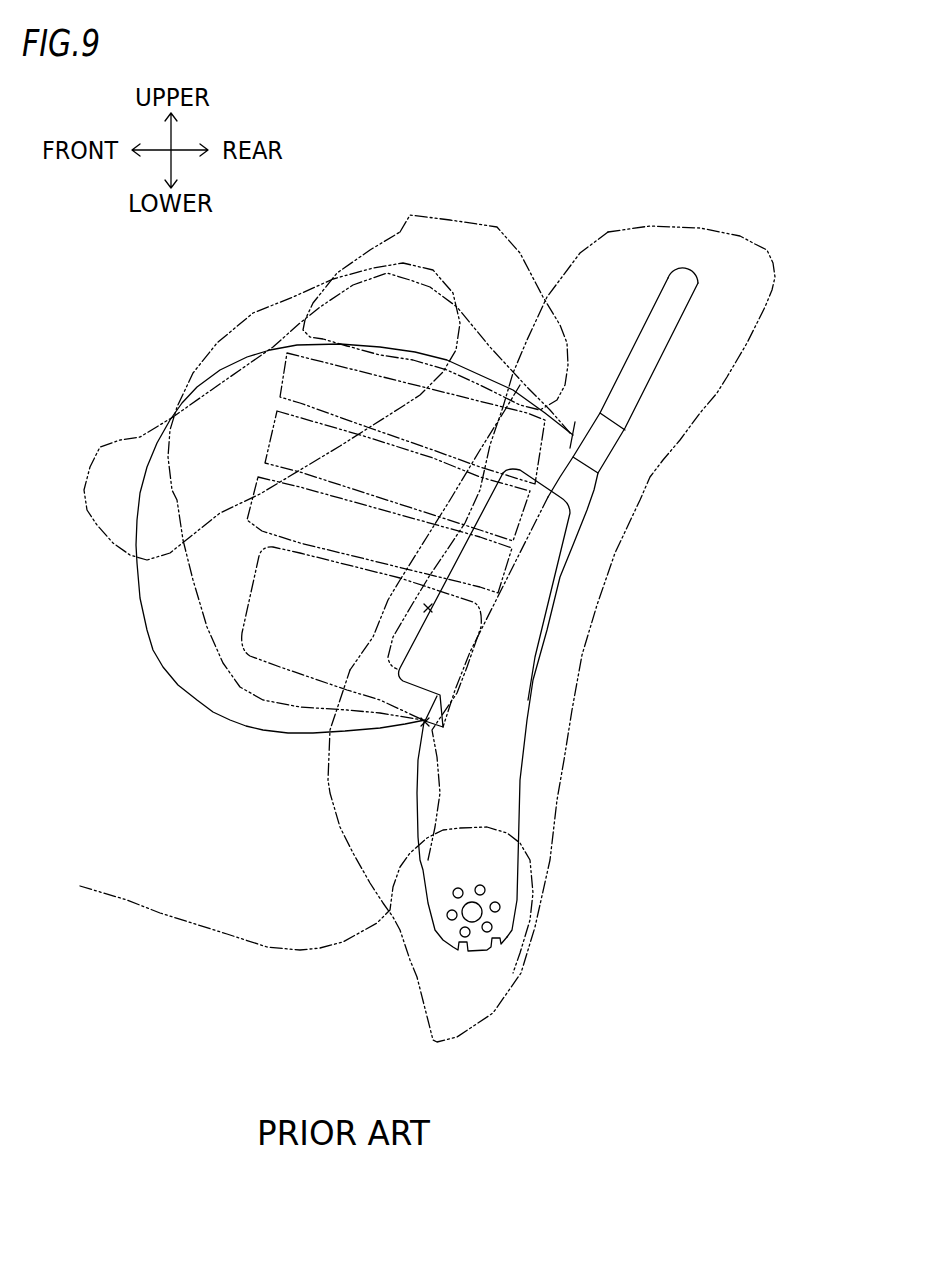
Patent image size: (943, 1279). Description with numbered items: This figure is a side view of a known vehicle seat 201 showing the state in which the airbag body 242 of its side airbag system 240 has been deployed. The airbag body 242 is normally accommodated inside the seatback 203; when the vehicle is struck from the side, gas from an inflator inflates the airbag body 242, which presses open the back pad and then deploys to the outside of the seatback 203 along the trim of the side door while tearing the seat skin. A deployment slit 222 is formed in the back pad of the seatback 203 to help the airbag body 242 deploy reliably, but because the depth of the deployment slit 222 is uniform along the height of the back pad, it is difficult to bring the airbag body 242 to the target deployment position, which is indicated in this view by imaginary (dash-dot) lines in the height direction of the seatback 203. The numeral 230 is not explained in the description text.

The vehicle seat 201 is at (691, 161).
The seatback 203 is at (694, 228).
The deployment slit 222 is at (481, 631).
The seat back pad 230 is at (610, 236).
The side airbag system 240 is at (453, 660).
The airbag body 242 is at (160, 667).